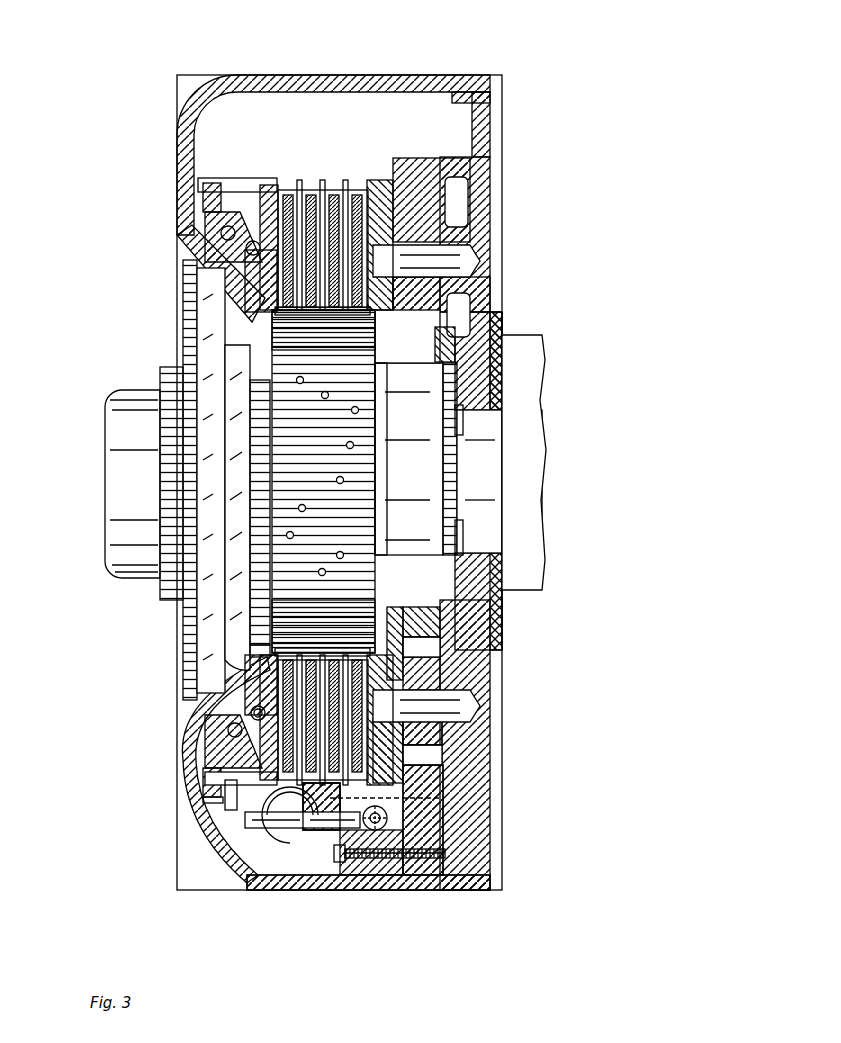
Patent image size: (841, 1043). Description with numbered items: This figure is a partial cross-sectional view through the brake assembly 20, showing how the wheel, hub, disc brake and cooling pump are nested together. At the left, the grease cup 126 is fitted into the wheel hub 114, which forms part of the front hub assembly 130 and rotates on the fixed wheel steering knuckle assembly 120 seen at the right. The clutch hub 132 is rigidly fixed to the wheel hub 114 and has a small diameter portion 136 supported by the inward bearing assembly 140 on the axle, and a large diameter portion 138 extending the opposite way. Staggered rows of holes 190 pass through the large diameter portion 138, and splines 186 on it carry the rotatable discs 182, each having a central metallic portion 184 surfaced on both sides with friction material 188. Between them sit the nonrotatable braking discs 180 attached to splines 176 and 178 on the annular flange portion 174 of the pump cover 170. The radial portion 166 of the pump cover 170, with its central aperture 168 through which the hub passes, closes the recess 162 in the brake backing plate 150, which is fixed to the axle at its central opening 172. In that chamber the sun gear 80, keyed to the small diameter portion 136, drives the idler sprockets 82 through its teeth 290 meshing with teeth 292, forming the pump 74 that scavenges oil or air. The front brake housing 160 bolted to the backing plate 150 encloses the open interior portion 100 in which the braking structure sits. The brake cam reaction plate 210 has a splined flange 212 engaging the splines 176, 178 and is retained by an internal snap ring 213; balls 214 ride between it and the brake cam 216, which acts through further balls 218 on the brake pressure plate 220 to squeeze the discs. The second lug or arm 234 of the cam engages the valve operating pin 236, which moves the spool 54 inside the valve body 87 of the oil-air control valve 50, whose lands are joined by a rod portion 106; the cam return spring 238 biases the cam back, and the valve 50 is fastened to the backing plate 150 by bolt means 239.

The brake assembly 20 is at (240, 80).
The oil-air control valve means 50 is at (340, 873).
The spool 54 is at (385, 826).
The pump 74 is at (425, 648).
The sun gear 80 is at (445, 620).
The idler sprockets 82 is at (418, 296).
The valve body 87 is at (393, 862).
The open interior portion 100 is at (315, 868).
The rod portion 106 is at (405, 807).
The wheel hub 114 is at (160, 580).
The wheel steering knuckle assembly 120 is at (530, 380).
The grease cup 126 is at (105, 483).
The front hub assembly 130 is at (183, 282).
The clutch hub 132 is at (430, 467).
The small diameter portion 136 is at (455, 527).
The large diameter portion 138 is at (250, 480).
The bearing assembly 140 is at (455, 521).
The brake backing plate 150 is at (484, 829).
The front brake housing 160 is at (215, 838).
The recess 162 is at (460, 308).
The radial portion 166 is at (390, 770).
The central aperture 168 is at (395, 600).
The pump cover 170 is at (380, 180).
The central opening 172 is at (458, 415).
The annular flange portion 174 is at (210, 800).
The spline 176 is at (235, 800).
The spline 178 is at (245, 178).
The nonrotatable braking discs 180 is at (323, 180).
The rotatable discs 182 is at (290, 195).
The central metallic portion 184 is at (345, 180).
The splines 186 is at (355, 372).
The friction material 188 is at (355, 195).
The holes 190 is at (355, 450).
The brake cam reaction plate 210 is at (215, 750).
The splined flange 212 is at (212, 183).
The internal snap ring 213 is at (203, 780).
The balls 214 is at (222, 233).
The brake cam 216 is at (245, 695).
The balls 218 is at (254, 713).
The brake pressure plate 220 is at (258, 668).
The second lug or arm 234 is at (260, 830).
The valve operating pin 236 is at (310, 830).
The cam return spring 238 is at (305, 845).
The bolt means 239 is at (360, 860).
The teeth 290 is at (496, 317).
The teeth 292 is at (455, 205).